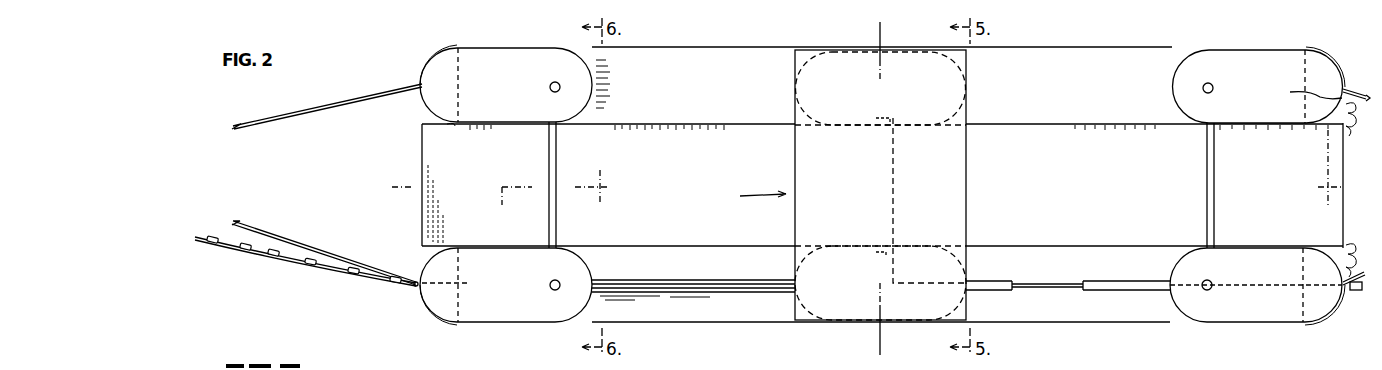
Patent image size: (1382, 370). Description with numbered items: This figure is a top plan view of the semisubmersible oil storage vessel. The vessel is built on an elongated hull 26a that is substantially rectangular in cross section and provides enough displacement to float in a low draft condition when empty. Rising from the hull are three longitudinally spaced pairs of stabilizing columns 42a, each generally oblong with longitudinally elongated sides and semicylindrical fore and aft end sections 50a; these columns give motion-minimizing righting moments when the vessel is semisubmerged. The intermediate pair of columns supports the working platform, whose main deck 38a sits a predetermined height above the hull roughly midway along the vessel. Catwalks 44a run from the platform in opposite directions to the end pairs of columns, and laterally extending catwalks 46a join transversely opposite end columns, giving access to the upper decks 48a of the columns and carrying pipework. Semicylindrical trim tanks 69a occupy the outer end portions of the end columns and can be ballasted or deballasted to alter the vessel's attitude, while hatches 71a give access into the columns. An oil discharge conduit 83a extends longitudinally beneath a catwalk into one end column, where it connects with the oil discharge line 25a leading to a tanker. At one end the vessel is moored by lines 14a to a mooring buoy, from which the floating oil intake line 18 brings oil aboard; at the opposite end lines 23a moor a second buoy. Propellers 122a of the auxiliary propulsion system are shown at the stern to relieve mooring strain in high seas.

The mooring lines 14a is at (266, 129).
The floating oil intake line 18 is at (280, 262).
The mooring lines 23a is at (1358, 86).
The oil discharge line 25a is at (1352, 295).
The hull 26a is at (422, 153).
The main deck 38a is at (850, 200).
The stabilizing columns 42a is at (523, 48).
The catwalks 44a is at (716, 283).
The laterally extending catwalks 46a is at (557, 160).
The upper decks 48a is at (1271, 271).
The semicylindrical end sections 50a is at (455, 124).
The trim tanks 69a is at (444, 70).
The hatches 71a is at (551, 91).
The oil discharge conduit 83a is at (1063, 288).
The propellers 122a is at (1304, 84).